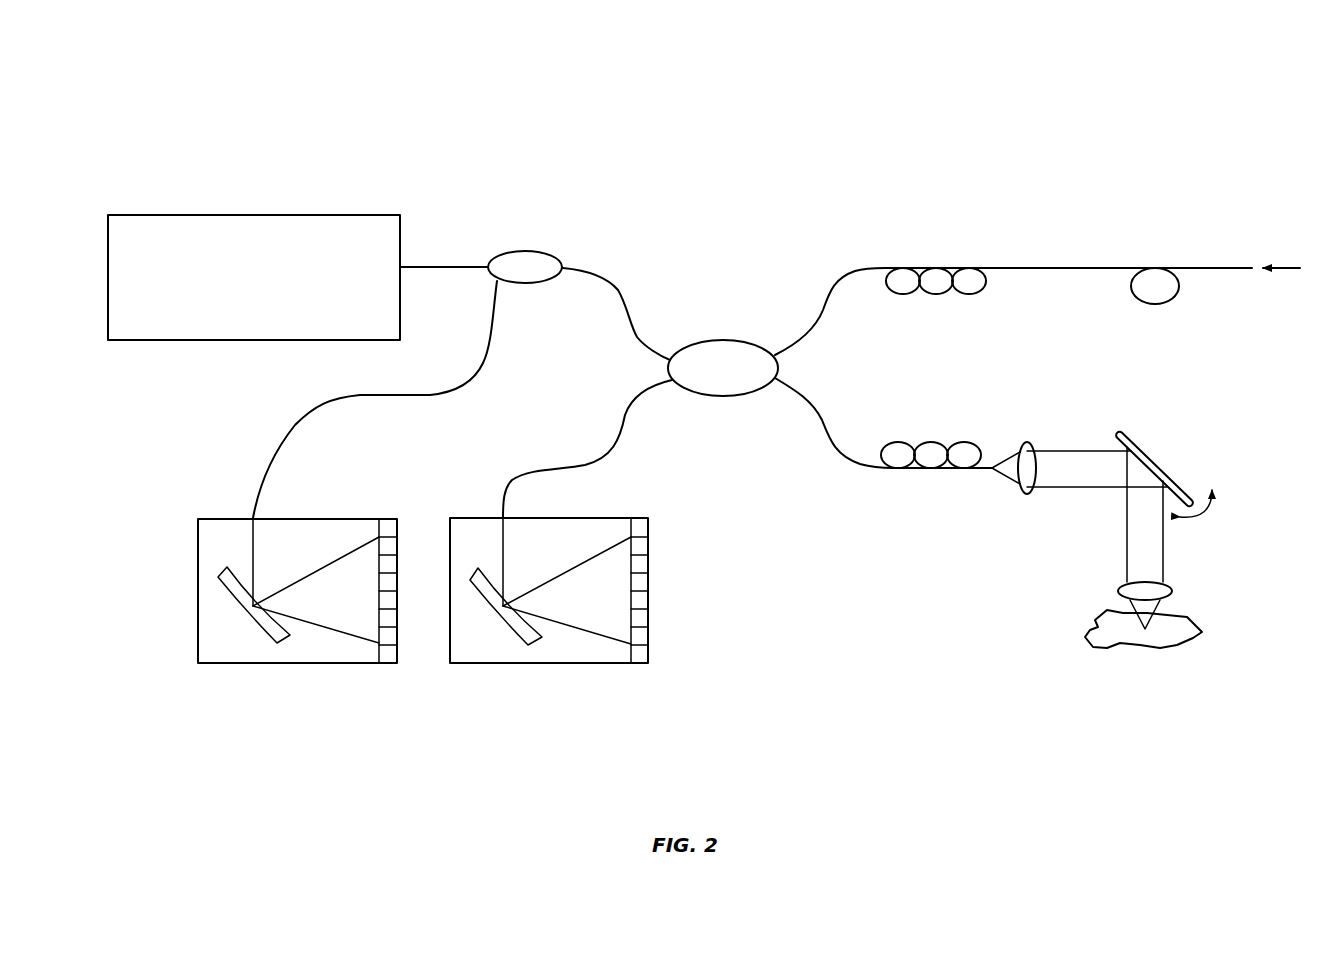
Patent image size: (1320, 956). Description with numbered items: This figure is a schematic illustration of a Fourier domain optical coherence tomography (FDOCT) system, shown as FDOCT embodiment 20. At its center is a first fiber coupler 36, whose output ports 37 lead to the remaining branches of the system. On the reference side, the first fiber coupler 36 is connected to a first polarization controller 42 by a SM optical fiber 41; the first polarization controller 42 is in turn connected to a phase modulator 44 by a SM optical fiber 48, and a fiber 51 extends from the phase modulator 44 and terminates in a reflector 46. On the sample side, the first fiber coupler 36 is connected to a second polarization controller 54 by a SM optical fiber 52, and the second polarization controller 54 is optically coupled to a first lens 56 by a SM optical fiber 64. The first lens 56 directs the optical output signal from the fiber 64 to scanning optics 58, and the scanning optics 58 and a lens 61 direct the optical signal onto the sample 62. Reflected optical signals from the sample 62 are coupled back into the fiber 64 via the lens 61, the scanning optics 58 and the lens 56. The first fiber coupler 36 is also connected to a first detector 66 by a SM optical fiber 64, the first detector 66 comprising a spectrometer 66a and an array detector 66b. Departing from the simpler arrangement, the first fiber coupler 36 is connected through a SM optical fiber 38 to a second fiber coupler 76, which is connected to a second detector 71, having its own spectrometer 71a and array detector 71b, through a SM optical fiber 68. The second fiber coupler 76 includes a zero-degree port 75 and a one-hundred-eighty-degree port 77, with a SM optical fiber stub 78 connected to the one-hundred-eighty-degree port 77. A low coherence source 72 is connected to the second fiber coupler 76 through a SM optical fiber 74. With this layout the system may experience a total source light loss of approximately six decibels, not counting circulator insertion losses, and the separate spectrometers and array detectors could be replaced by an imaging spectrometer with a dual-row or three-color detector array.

The FDOCT embodiment 20 is at (136, 49).
The first fiber coupler 36 is at (722, 339).
The coupler output ports 37 is at (777, 360).
The SM optical fiber 38 is at (605, 277).
The SM optical fiber 41 is at (828, 301).
The first polarization controller 42 is at (935, 268).
The phase modulator 44 is at (1178, 297).
The reflector 46 is at (1251, 268).
The SM optical fiber 48 is at (1067, 270).
The fiber 51 is at (1217, 267).
The SM optical fiber 52 is at (825, 437).
The second polarization controller 54 is at (928, 470).
The first lens 56 is at (1025, 494).
The scanning optics 58 is at (1140, 440).
The lens 61 is at (1168, 582).
The sample 62 is at (1175, 647).
The SM optical fiber 64 is at (626, 421).
The first detector 66 is at (593, 610).
The spectrometer 66a is at (525, 638).
The array detector 66b is at (642, 637).
The SM optical fiber 68 is at (450, 394).
The second detector 71 is at (262, 597).
The spectrometer 71a is at (222, 576).
The array detector 71b is at (377, 617).
The low coherence source 72 is at (158, 215).
The SM optical fiber 74 is at (427, 266).
The 0° port 75 is at (494, 280).
The second fiber coupler 76 is at (546, 251).
The 180° port 77 is at (560, 278).
The SM optical fiber stub 78 is at (561, 293).